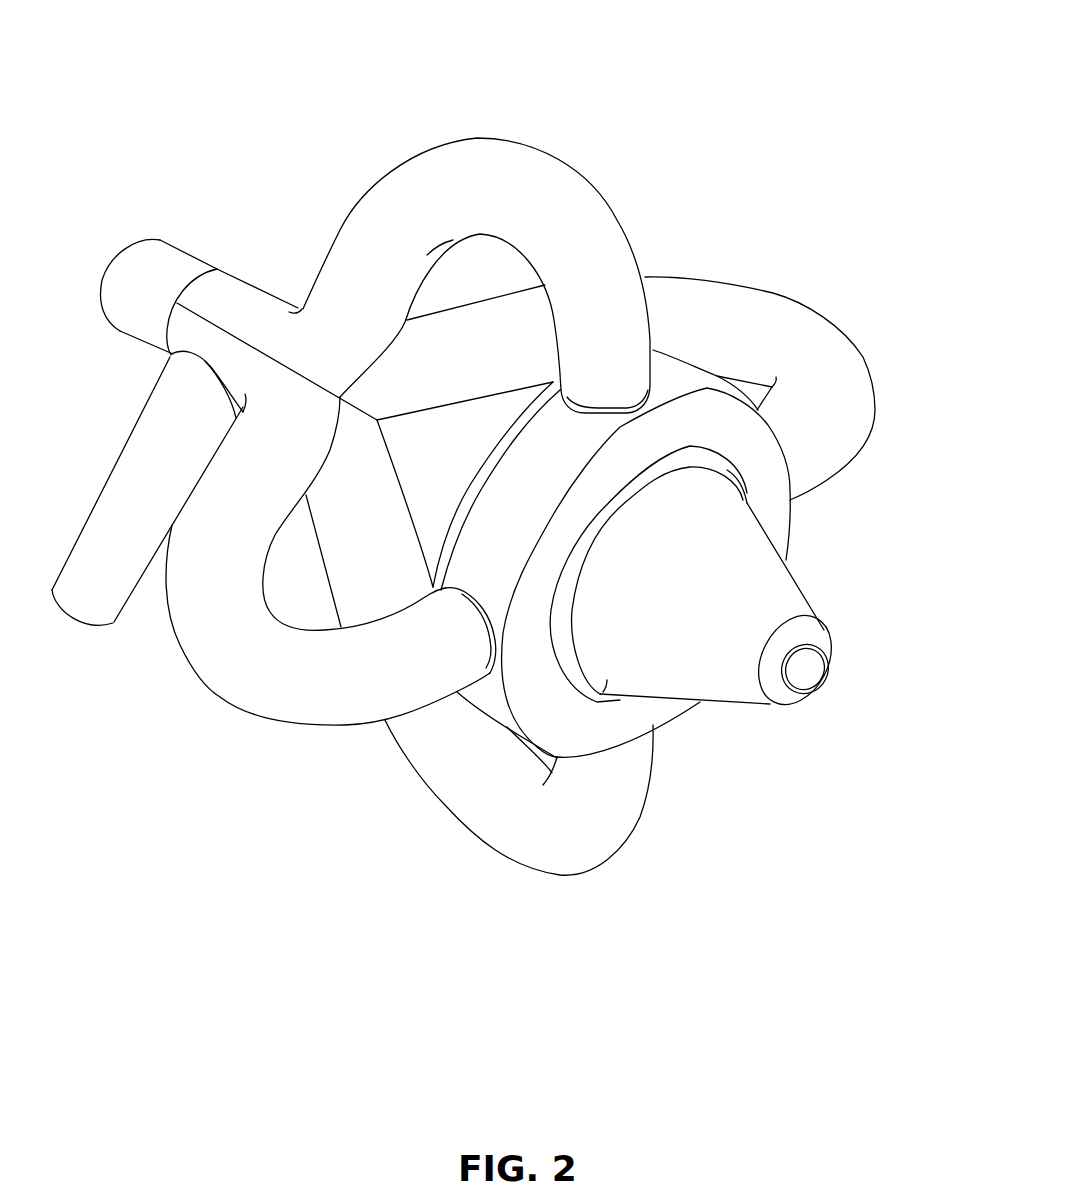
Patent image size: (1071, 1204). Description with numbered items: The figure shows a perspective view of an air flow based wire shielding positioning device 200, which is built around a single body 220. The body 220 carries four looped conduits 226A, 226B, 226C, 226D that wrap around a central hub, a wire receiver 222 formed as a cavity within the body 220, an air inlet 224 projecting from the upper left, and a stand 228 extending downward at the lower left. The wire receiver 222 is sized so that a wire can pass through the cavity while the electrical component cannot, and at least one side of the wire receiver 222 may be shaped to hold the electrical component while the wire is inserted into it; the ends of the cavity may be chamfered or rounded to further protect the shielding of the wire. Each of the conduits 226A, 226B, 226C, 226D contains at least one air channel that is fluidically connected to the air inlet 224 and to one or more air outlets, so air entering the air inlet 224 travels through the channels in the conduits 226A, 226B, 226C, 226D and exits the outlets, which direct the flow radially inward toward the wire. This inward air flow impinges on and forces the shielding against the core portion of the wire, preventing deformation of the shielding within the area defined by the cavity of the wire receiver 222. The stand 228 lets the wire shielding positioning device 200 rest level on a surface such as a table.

The wire shielding positioning device 200 is at (214, 75).
The body 220 is at (788, 530).
The wire receiver 222 is at (803, 663).
The air inlet 224 is at (117, 257).
The conduit 226A is at (743, 297).
The conduit 226B is at (453, 160).
The conduit 226C is at (270, 697).
The conduit 226D is at (578, 853).
The stand 228 is at (95, 515).